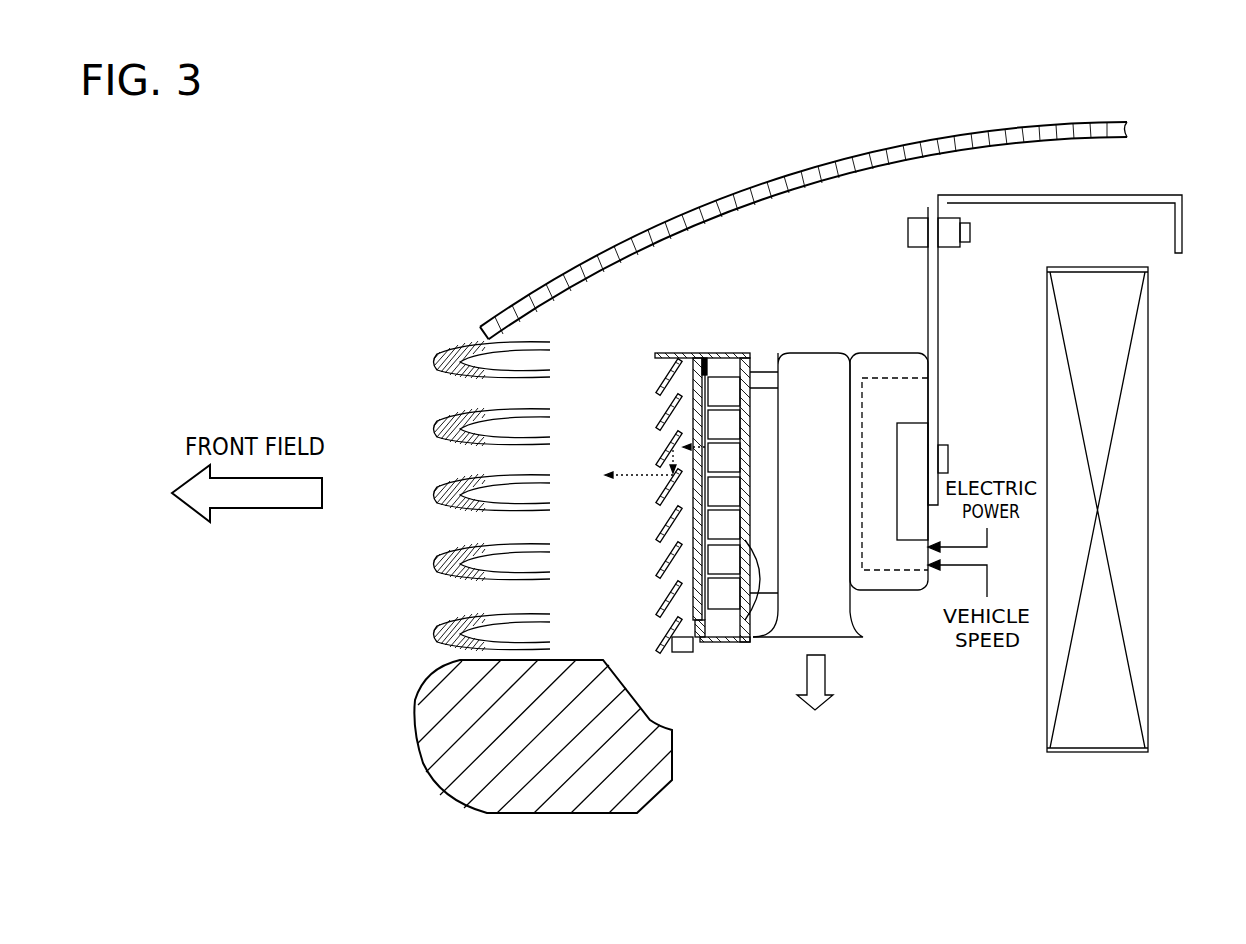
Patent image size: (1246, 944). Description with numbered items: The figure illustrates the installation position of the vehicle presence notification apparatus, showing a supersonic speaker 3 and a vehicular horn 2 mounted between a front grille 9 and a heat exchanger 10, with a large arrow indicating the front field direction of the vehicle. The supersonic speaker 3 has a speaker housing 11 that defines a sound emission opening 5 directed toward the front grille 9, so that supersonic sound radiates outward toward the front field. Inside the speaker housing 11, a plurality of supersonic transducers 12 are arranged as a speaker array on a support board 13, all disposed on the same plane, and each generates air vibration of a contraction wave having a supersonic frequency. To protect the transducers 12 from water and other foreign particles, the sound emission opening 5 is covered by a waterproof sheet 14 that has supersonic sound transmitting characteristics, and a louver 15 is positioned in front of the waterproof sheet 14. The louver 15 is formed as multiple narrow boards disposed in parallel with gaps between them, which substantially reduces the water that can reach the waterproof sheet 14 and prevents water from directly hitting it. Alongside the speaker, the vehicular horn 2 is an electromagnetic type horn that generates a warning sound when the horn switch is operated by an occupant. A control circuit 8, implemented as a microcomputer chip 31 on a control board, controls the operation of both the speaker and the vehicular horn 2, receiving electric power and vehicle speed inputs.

The vehicular horn 2 is at (803, 343).
The supersonic speaker 3 is at (750, 338).
The sound emission opening 5 is at (632, 358).
The control circuit 8 is at (878, 378).
The front grille 9 is at (432, 427).
The heat exchanger 10 is at (1148, 470).
The speaker housing 11 is at (722, 643).
The supersonic transducers 12 is at (715, 597).
The support board 13 is at (690, 617).
The waterproof sheet 14 is at (693, 495).
The louver 15 is at (660, 460).
The microcomputer chip 31 is at (910, 423).